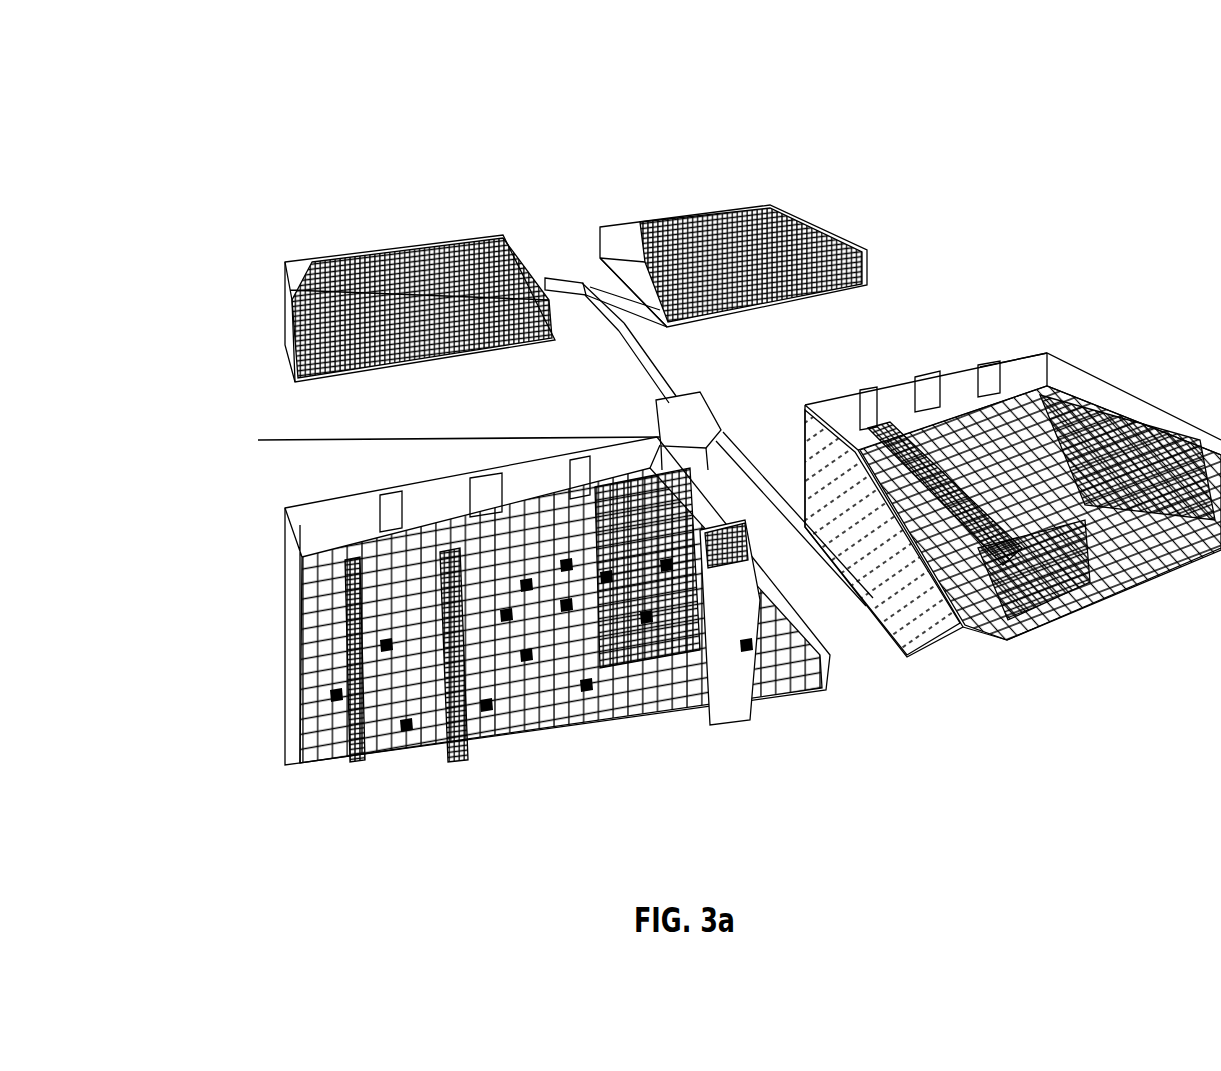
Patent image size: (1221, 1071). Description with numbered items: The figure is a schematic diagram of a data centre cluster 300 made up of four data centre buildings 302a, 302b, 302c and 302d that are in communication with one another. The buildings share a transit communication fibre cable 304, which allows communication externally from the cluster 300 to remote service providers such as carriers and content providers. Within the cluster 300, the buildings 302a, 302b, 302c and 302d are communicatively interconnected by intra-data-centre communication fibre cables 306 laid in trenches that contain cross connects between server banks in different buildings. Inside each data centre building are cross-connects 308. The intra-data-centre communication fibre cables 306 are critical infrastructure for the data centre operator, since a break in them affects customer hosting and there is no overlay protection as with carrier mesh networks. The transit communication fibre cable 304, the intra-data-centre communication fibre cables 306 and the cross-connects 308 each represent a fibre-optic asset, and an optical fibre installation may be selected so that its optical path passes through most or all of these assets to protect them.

The data centre cluster 300 is at (745, 46).
The data centre building 302a is at (420, 226).
The data centre building 302b is at (733, 185).
The data centre building 302c is at (557, 686).
The data centre building 302d is at (1013, 458).
The transit communication fibre cable 304 is at (440, 347).
The intra-data-centre communication fibre cables 306 is at (592, 215).
The cross-connects 308 is at (1009, 249).